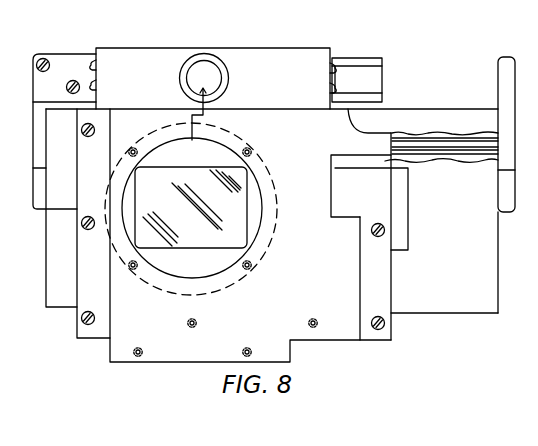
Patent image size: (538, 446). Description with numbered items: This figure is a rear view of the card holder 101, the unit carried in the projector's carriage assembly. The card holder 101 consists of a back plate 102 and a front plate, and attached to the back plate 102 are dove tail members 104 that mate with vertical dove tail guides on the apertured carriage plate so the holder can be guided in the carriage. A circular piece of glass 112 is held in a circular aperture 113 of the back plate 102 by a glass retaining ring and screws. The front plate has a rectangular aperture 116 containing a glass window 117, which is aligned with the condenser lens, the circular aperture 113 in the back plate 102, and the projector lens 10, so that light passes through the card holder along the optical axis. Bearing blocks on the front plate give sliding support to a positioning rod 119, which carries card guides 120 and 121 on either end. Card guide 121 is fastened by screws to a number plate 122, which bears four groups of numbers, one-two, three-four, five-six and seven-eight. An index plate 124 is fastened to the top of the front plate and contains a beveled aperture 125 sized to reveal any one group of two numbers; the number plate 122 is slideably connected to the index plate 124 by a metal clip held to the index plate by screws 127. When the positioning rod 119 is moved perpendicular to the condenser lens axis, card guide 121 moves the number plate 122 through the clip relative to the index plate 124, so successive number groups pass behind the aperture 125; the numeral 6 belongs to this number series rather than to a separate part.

The housing base 6 is at (421, 313).
The projector lens 10 is at (203, 48).
The card holder 101 is at (405, 101).
The back plate 102 is at (340, 170).
The dove tail members 104 is at (77, 273).
The circular piece of glass 112 is at (218, 148).
The aperture 113 is at (250, 169).
The rectangular aperture 116 is at (258, 193).
The glass window 117 is at (195, 247).
The positioning rod 119 is at (420, 134).
The card guide 120 is at (496, 83).
The card guide 121 is at (63, 209).
The number plate 122 is at (383, 62).
The index plate 124 is at (287, 48).
The beveled aperture 125 is at (207, 52).
The screws 127 is at (96, 78).